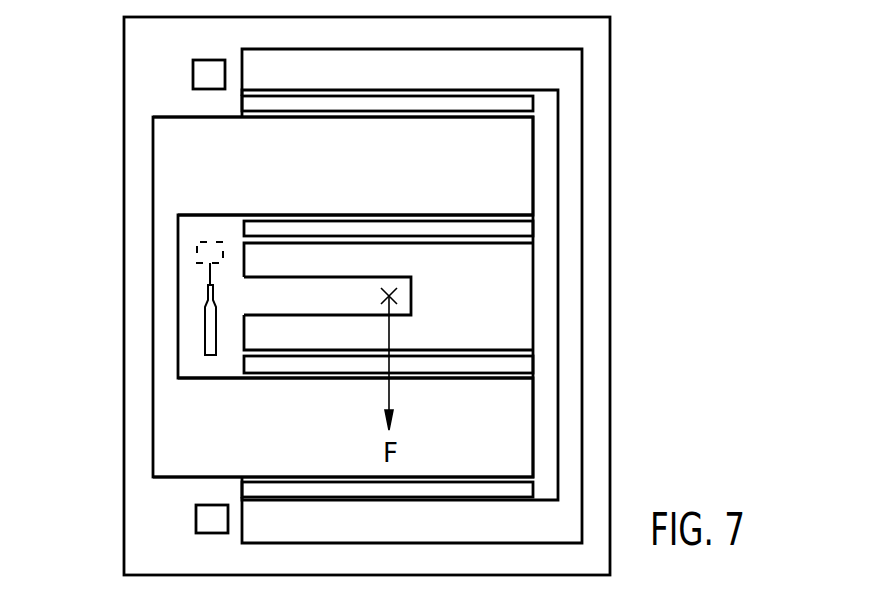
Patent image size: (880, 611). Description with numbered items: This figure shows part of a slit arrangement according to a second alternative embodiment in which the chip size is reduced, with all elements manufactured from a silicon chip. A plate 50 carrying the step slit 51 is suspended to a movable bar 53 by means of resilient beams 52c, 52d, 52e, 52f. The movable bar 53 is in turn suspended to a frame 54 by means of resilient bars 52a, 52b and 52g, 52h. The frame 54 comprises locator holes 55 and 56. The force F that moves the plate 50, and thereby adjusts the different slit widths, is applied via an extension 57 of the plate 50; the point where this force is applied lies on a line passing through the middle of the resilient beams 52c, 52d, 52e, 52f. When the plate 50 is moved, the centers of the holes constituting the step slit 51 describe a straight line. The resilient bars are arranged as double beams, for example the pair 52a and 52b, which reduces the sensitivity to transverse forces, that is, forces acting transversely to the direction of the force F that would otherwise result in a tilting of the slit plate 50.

The plate 50 is at (188, 367).
The step slit 51 is at (207, 333).
The resilient bar 52a is at (395, 90).
The resilient bar 52b is at (400, 117).
The resilient beam 52c is at (430, 215).
The resilient beam 52d is at (435, 243).
The resilient beam 52e is at (437, 349).
The resilient beam 52f is at (440, 378).
The resilient bar 52g is at (417, 477).
The resilient bar 52h is at (420, 500).
The movable bar 53 is at (548, 358).
The frame 54 is at (137, 186).
The locator hole 55 is at (207, 71).
The locator hole 56 is at (207, 522).
The extension 57 is at (290, 288).